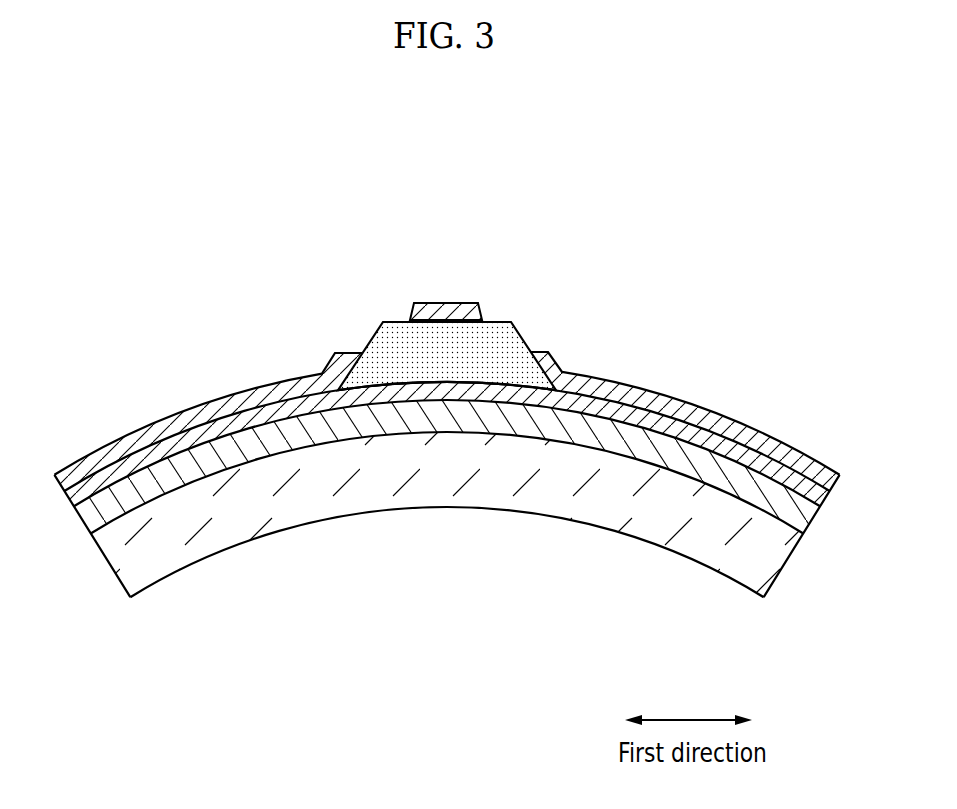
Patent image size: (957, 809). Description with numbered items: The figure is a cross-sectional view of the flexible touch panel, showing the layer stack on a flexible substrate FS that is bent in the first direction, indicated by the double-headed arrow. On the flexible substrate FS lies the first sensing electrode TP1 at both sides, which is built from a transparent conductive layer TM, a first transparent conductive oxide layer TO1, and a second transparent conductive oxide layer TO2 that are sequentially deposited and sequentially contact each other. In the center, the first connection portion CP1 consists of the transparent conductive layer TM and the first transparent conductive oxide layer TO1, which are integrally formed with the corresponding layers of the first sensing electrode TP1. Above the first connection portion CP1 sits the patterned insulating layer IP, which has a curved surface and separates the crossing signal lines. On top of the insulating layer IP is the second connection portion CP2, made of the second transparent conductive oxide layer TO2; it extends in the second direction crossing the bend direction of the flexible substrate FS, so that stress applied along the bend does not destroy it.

The first sensing electrode TP1 is at (262, 323).
The transparent conductive layer TM is at (157, 470).
The first transparent conductive oxide layer TO1 is at (200, 435).
The second transparent conductive oxide layer TO2 is at (247, 400).
The insulating layer IP is at (512, 345).
The first connection portion CP1 is at (507, 588).
The second connection portion CP2 is at (462, 293).
The flexible substrate FS is at (627, 520).